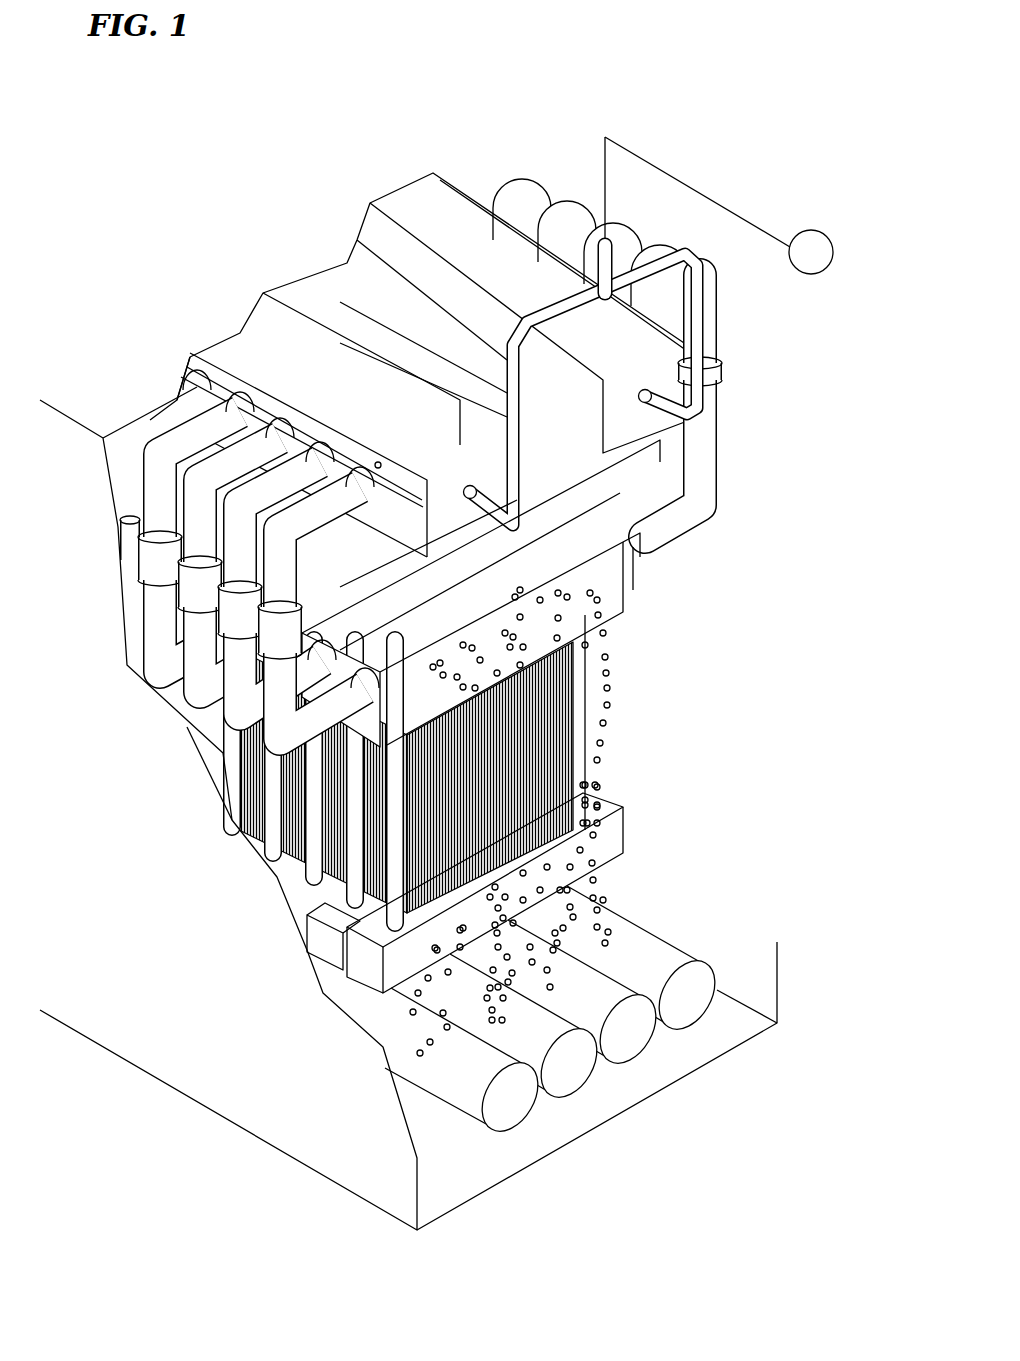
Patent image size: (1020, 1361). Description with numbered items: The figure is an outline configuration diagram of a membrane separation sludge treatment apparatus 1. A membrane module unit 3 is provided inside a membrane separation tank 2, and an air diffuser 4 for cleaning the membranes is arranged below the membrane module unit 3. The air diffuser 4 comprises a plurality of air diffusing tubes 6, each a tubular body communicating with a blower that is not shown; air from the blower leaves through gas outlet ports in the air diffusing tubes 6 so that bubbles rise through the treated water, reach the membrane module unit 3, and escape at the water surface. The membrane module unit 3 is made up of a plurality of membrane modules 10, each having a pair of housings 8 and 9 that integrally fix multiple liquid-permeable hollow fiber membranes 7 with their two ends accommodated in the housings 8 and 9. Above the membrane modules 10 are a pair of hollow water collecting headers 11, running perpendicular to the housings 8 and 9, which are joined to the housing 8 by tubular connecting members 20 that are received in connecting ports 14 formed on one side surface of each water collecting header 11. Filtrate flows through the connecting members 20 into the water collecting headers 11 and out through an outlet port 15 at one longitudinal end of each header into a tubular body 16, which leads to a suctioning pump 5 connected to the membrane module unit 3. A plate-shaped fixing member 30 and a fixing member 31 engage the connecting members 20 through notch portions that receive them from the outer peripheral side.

The membrane separation sludge treatment apparatus 1 is at (574, 133).
The membrane separation tank 2 is at (187, 1037).
The membrane module unit 3 is at (498, 716).
The air diffuser 4 is at (585, 1052).
The suctioning pump 5 is at (833, 252).
The air diffusing tube 6 is at (693, 1003).
The hollow fiber membranes 7 is at (555, 752).
The housing 8 is at (582, 594).
The housing 9 is at (470, 858).
The membrane module 10 is at (498, 716).
The water collecting header 11 is at (315, 345).
The connecting port 14 is at (227, 398).
The outlet port 15 is at (468, 485).
The tubular body 16 is at (675, 240).
The connecting member 20 is at (711, 443).
The fixing member 30 is at (218, 356).
The fixing member 31 is at (366, 724).